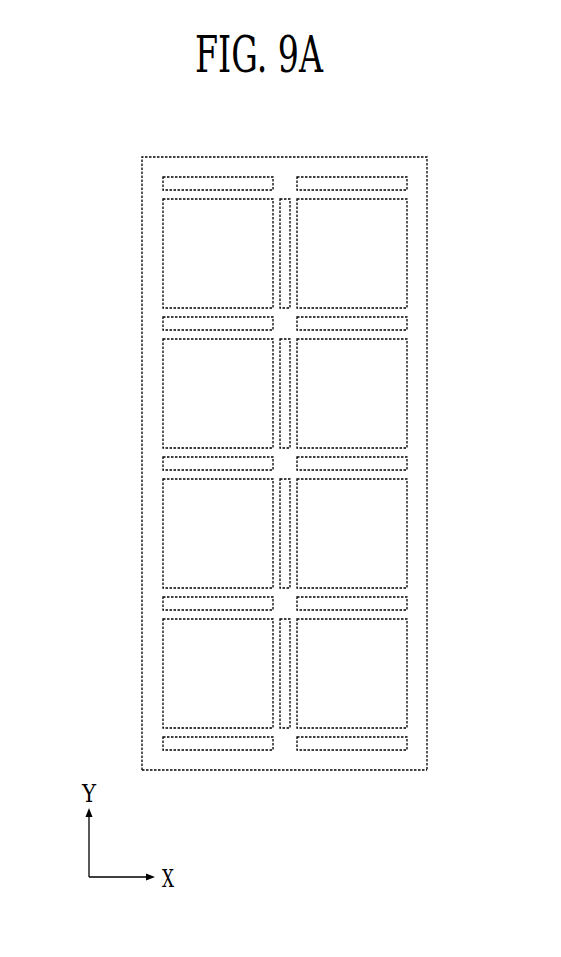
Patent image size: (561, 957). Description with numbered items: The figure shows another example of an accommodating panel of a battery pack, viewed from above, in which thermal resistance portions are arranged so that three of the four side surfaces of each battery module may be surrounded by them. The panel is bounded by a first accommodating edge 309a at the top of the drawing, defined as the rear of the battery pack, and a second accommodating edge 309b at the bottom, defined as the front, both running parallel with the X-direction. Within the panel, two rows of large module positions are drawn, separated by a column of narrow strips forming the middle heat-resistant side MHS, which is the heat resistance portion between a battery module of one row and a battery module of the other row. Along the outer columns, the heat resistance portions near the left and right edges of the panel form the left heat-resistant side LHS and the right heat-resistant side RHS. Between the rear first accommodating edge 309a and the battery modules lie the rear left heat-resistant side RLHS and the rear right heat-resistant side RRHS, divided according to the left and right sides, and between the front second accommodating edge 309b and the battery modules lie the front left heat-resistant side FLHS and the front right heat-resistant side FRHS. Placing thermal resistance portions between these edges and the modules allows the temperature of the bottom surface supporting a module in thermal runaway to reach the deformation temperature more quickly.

The first accommodating edge 309a is at (200, 156).
The second accommodating edge 309b is at (372, 771).
The middle heat-resistant side MHS is at (286, 190).
The rear left heat-resistant side RLHS is at (155, 180).
The rear right heat-resistant side RRHS is at (415, 182).
The left heat-resistant side LHS is at (155, 462).
The right heat-resistant side RHS is at (415, 462).
The front left heat-resistant side FLHS is at (155, 742).
The front right heat-resistant side FRHS is at (415, 742).